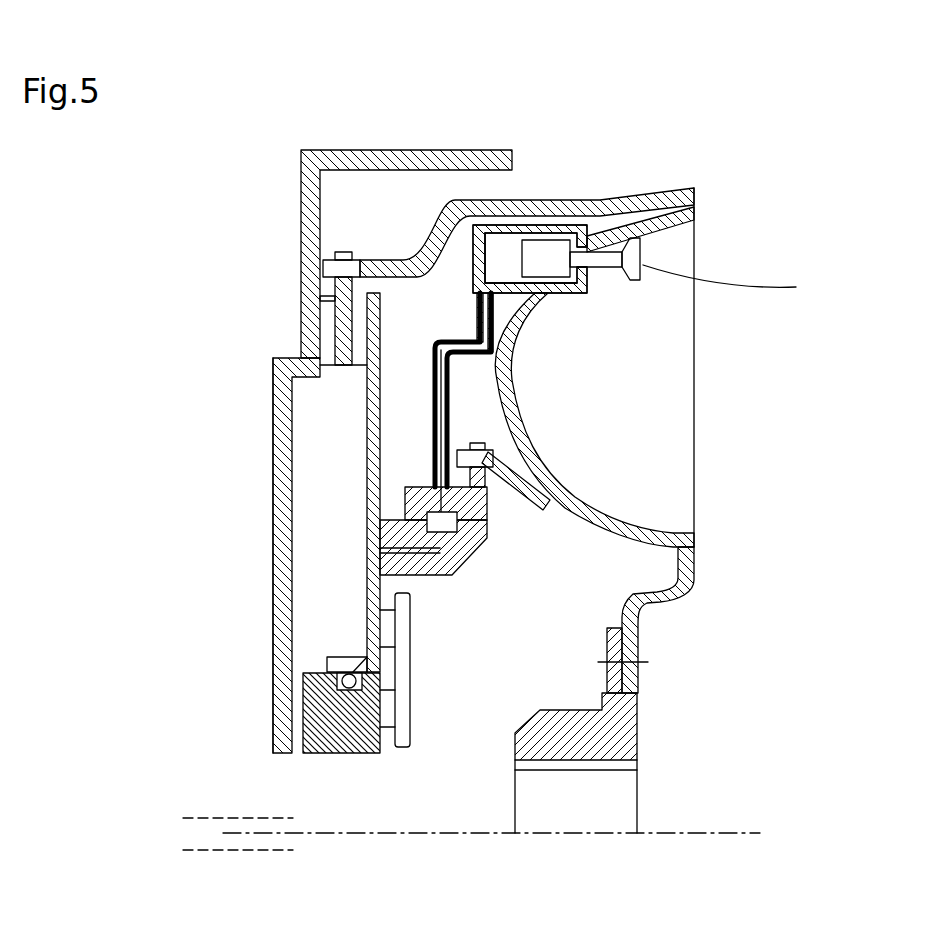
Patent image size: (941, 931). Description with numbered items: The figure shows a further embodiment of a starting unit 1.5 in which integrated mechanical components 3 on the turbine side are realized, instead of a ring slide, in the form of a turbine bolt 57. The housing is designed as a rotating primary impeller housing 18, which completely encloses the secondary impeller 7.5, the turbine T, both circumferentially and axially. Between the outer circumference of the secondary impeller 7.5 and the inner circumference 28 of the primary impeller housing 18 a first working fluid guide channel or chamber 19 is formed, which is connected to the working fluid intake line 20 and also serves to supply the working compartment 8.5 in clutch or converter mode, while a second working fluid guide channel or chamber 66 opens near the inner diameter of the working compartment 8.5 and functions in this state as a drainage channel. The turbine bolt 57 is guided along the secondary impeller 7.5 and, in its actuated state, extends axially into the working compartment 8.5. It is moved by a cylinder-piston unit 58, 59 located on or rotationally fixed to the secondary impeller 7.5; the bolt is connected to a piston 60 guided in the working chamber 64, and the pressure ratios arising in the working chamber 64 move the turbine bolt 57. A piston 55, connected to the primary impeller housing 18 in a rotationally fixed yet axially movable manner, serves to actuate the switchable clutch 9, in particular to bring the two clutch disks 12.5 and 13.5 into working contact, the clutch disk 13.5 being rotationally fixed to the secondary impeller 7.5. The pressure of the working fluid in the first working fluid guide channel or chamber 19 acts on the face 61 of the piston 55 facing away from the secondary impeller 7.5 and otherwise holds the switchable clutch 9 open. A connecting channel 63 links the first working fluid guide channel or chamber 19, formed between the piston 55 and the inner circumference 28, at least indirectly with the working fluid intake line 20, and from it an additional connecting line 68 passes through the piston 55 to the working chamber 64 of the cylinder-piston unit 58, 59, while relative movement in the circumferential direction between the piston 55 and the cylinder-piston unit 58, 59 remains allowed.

The starting unit 1.5 is at (684, 113).
The integrated mechanical components 3 is at (703, 247).
The secondary impeller 7.5 is at (700, 548).
The working compartment 8.5 is at (646, 453).
The turbine T is at (613, 376).
The switchable clutch 9 is at (323, 316).
The clutch disk 12.5 is at (303, 340).
The clutch disk 13.5 is at (330, 290).
The primary impeller housing 18 is at (275, 620).
The first working fluid guide channel or chamber 19 is at (343, 594).
The working fluid intake line 20 is at (203, 833).
The inner circumference 28 is at (300, 515).
The piston 55 is at (365, 470).
The turbine bolt 57 is at (645, 243).
The cylinder-piston unit 58 is at (555, 206).
The sensor housing 59 is at (558, 200).
The piston 60 is at (563, 250).
The face 61 is at (360, 395).
The connecting channel 63 is at (457, 540).
The working chamber 64 is at (500, 250).
The second working fluid guide channel or chamber 66 is at (722, 590).
The connecting line 68 is at (300, 710).